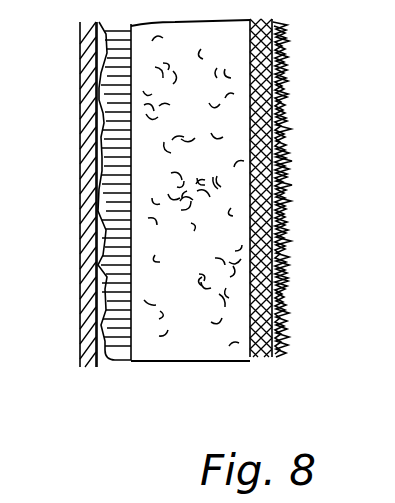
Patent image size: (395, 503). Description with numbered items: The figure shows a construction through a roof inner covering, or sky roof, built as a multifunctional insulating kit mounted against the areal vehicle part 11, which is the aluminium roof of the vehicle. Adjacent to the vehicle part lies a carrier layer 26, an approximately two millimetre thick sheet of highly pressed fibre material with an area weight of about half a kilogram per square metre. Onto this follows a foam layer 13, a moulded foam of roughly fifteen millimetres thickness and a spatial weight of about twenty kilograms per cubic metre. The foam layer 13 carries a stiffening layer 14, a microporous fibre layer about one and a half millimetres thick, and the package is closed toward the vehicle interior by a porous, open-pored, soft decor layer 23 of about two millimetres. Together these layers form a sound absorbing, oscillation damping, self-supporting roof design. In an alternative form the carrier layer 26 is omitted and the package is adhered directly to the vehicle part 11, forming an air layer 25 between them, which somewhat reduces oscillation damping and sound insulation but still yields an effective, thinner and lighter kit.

The areal vehicle part 11 is at (82, 165).
The air layer 25 is at (100, 362).
The carrier layer 26 is at (125, 362).
The foam layer 13 is at (205, 345).
The stiffening layer 14 is at (265, 358).
The decor layer 23 is at (296, 76).